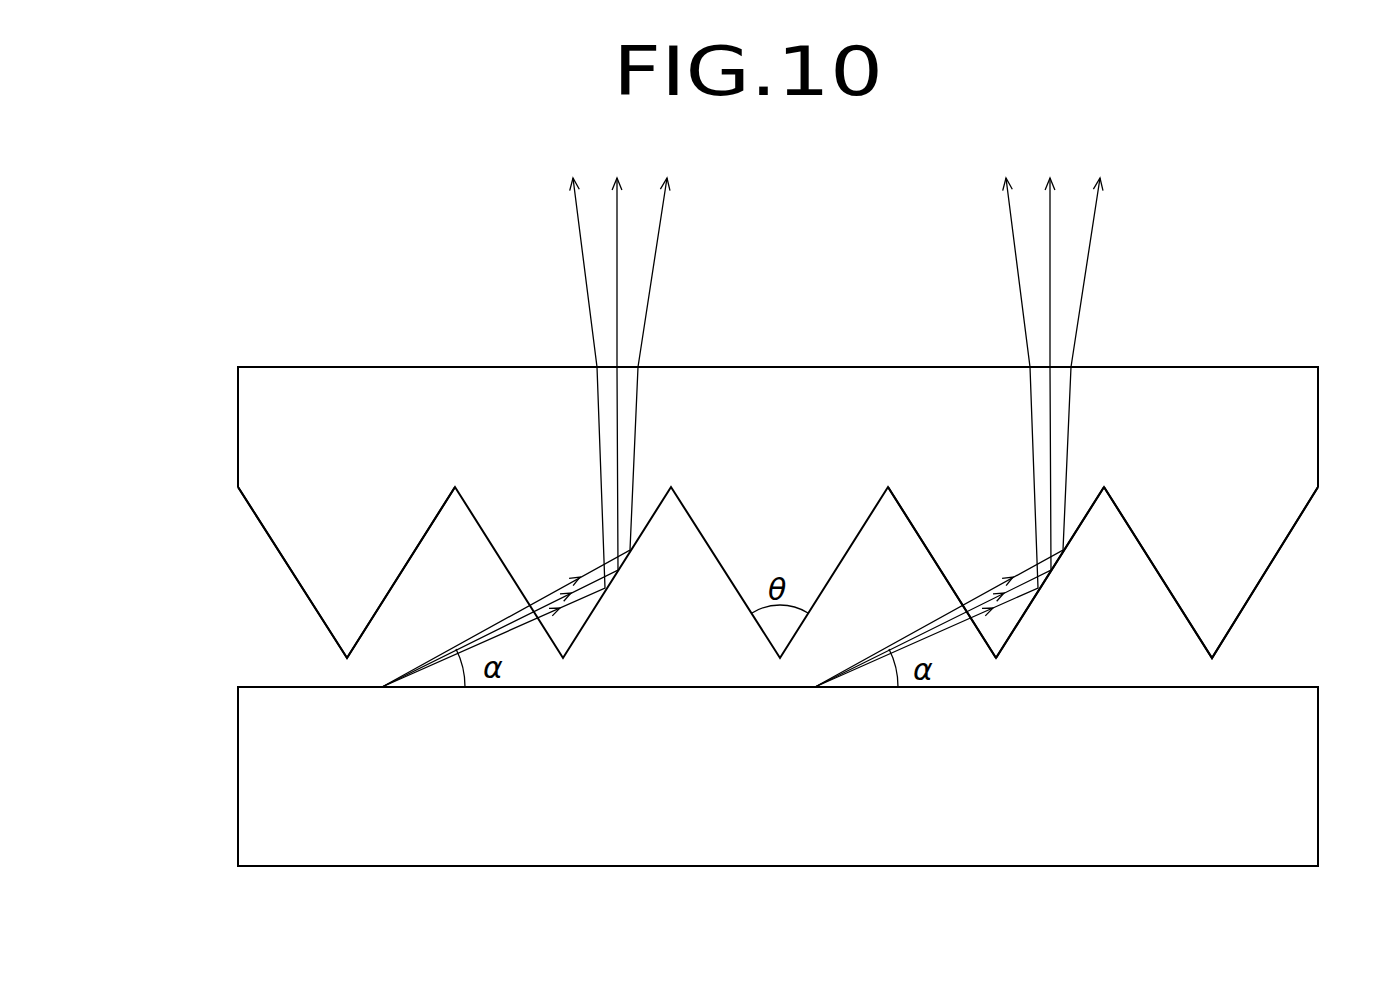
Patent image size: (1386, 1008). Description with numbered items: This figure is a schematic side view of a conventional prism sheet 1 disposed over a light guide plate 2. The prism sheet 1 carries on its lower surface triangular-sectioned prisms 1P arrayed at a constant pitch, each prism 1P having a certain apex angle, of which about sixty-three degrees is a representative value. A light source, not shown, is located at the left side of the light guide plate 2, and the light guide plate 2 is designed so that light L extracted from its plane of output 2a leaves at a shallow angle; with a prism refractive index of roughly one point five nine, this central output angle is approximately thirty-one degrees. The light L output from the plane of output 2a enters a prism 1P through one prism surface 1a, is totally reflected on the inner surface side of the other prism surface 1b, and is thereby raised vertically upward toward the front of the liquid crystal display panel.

The prism sheet 1 is at (273, 442).
The prism 1P is at (310, 567).
The prism surface 1a is at (937, 572).
The other prism surface 1b is at (1025, 617).
The light guide plate 2 is at (250, 762).
The plane of output 2a is at (1090, 687).
The light L is at (617, 262).